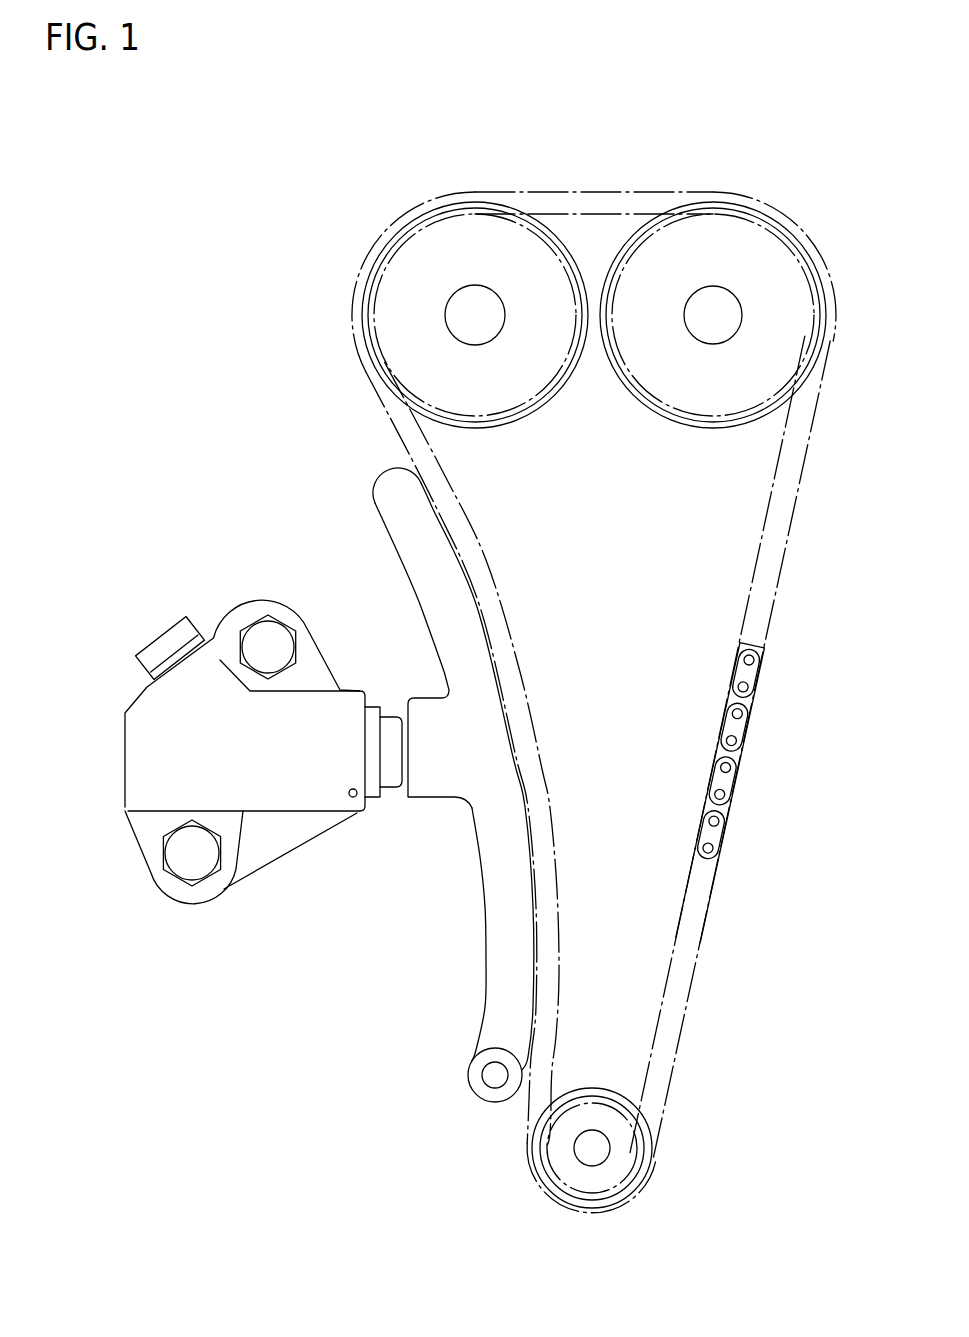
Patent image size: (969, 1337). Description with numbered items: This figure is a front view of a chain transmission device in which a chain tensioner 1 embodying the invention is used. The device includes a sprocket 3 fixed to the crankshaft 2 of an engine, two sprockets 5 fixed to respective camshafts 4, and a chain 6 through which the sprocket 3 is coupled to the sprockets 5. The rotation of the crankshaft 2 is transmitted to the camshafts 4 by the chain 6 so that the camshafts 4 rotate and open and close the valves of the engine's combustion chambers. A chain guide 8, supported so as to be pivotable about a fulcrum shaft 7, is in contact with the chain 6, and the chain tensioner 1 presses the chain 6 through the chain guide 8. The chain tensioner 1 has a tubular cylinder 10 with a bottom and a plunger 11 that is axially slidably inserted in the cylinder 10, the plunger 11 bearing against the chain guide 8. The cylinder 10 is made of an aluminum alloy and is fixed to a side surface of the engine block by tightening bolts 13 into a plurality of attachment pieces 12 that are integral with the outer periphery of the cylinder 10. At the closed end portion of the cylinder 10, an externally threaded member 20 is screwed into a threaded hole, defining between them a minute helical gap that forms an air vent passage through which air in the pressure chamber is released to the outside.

The chain tensioner 1 is at (130, 707).
The crankshaft 2 is at (576, 1153).
The sprocket 3 is at (641, 1166).
The camshaft 4 is at (462, 305).
The sprocket 5 is at (645, 258).
The chain 6 is at (758, 750).
The fulcrum shaft 7 is at (486, 1079).
The chain guide 8 is at (390, 487).
The cylinder 10 is at (315, 798).
The plunger 11 is at (390, 780).
The attachment piece 12 is at (288, 606).
The bolt 13 is at (262, 640).
The externally threaded member 20 is at (168, 635).